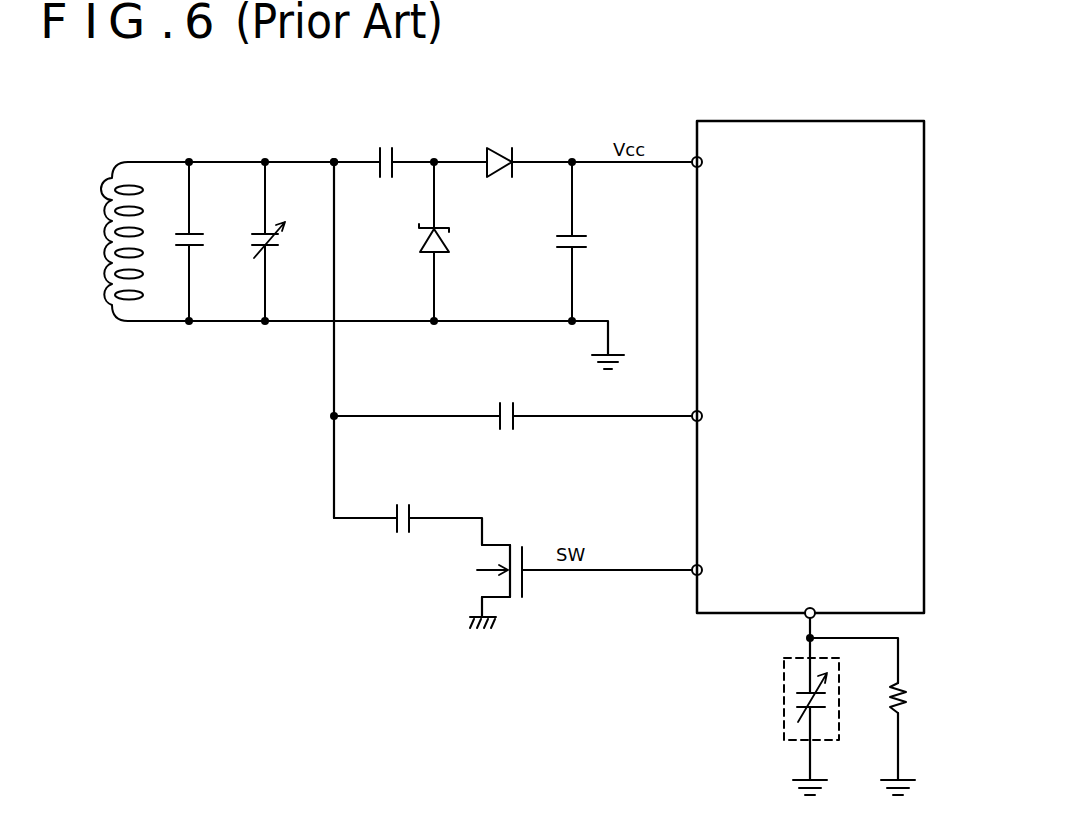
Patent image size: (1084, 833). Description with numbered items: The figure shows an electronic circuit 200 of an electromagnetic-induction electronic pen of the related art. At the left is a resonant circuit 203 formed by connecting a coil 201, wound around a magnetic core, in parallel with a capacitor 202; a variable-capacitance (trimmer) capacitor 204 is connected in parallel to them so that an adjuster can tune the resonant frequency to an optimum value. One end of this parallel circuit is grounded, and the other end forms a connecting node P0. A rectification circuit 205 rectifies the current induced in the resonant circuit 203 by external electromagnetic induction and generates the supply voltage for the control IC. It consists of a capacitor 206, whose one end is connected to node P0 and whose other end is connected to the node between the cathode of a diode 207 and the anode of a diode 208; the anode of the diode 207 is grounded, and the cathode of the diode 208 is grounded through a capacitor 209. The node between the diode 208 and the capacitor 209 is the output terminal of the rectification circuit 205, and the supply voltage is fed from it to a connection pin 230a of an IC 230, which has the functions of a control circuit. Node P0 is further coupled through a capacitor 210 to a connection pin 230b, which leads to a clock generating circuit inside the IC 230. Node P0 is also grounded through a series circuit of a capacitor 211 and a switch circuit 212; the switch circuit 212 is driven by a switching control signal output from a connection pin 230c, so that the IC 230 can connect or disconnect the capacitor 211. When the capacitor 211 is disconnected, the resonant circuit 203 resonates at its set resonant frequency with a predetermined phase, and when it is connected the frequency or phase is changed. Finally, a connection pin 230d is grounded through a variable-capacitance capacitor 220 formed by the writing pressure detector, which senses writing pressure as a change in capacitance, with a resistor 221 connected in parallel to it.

The electronic circuit 200 is at (301, 136).
The coil 201 is at (111, 226).
The capacitor 202 is at (205, 242).
The resonant circuit 203 is at (172, 152).
The variable-capacitance capacitor 204 is at (287, 236).
The rectification circuit 205 is at (568, 152).
The capacitor 206 is at (386, 150).
The diode 207 is at (441, 256).
The diode 208 is at (490, 178).
The capacitor 209 is at (590, 242).
The capacitor 210 is at (507, 433).
The capacitor 211 is at (403, 537).
The switch circuit 212 is at (507, 606).
The variable-capacitance capacitor 220 is at (783, 685).
The resistor 221 is at (906, 705).
The IC 230 is at (742, 616).
The connection pin 230a is at (691, 167).
The connection pin 230b is at (691, 421).
The connection pin 230c is at (691, 576).
The connection pin 230d is at (812, 606).
The connecting node P0 is at (336, 156).